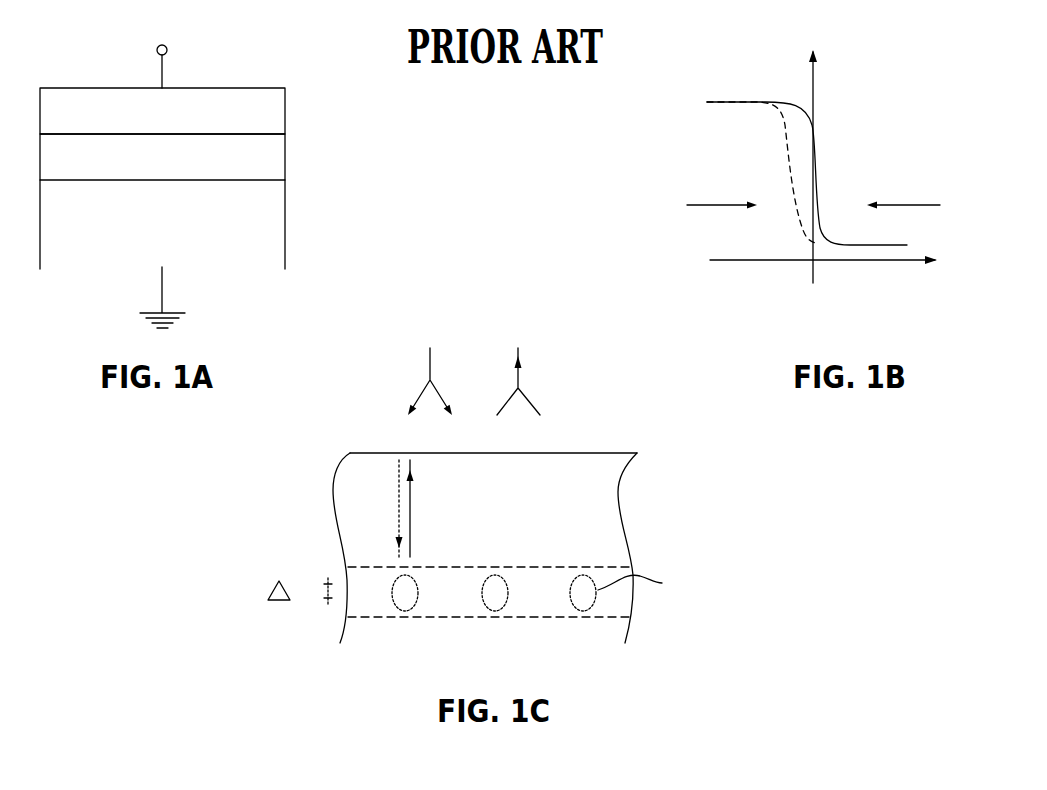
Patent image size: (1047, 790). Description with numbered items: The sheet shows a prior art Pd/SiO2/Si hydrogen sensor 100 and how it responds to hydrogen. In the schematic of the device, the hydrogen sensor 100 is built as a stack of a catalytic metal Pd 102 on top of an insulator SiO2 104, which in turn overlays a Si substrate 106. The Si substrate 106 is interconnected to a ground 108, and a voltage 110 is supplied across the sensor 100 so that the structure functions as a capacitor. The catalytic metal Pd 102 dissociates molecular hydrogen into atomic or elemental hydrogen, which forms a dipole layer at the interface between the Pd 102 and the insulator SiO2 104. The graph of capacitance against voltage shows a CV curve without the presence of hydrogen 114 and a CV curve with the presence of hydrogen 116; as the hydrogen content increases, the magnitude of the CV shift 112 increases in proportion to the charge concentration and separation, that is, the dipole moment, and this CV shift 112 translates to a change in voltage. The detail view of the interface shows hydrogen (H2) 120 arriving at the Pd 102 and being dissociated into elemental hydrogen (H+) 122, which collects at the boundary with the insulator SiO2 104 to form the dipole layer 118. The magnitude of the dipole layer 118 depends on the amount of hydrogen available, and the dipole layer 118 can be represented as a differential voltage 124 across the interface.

In FIG. 1A, the hydrogen sensor 100 is at (197, 175).
In FIG. 1A, the catalytic metal Pd 102 is at (162, 111).
In FIG. 1C, the catalytic metal Pd 102 is at (485, 534).
In FIG. 1A, the insulator SiO2 104 is at (162, 157).
In FIG. 1C, the insulator SiO2 104 is at (478, 657).
In FIG. 1A, the Si substrate 106 is at (162, 224).
In FIG. 1A, the ground 108 is at (163, 290).
In FIG. 1A, the voltage 110 is at (157, 50).
In FIG. 1B, the CV shift 112 is at (842, 175).
In FIG. 1B, the CV curve without the presence of hydrogen 114 is at (822, 173).
In FIG. 1B, the CV curve with the presence of hydrogen 116 is at (798, 160).
In FIG. 1C, the dipole layer 118 is at (494, 593).
In FIG. 1C, the hydrogen (H2) 120 is at (430, 322).
In FIG. 1C, the elemental hydrogen (H+) 122 is at (659, 588).
In FIG. 1C, the differential voltage 124 is at (266, 596).